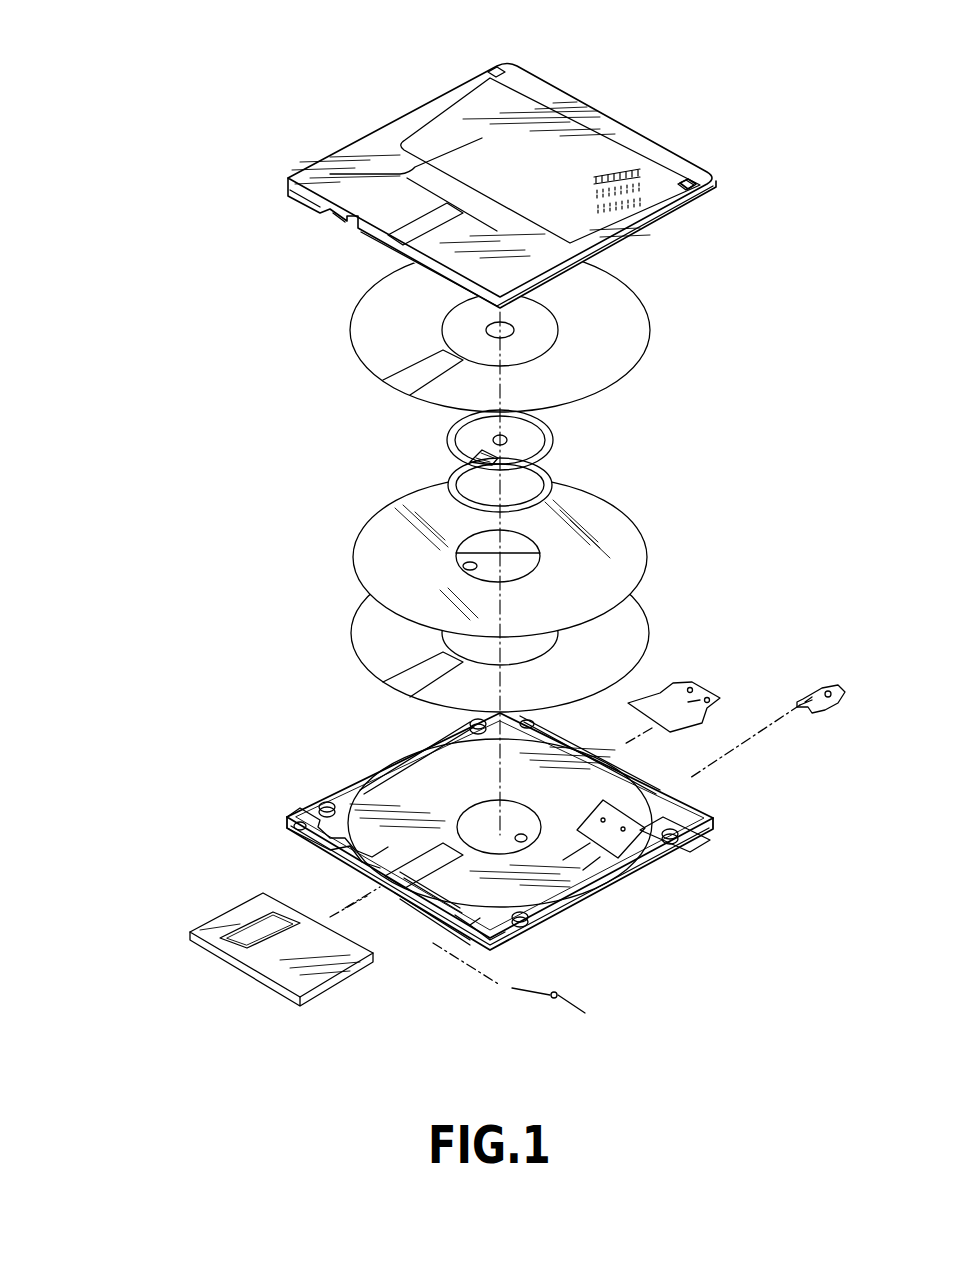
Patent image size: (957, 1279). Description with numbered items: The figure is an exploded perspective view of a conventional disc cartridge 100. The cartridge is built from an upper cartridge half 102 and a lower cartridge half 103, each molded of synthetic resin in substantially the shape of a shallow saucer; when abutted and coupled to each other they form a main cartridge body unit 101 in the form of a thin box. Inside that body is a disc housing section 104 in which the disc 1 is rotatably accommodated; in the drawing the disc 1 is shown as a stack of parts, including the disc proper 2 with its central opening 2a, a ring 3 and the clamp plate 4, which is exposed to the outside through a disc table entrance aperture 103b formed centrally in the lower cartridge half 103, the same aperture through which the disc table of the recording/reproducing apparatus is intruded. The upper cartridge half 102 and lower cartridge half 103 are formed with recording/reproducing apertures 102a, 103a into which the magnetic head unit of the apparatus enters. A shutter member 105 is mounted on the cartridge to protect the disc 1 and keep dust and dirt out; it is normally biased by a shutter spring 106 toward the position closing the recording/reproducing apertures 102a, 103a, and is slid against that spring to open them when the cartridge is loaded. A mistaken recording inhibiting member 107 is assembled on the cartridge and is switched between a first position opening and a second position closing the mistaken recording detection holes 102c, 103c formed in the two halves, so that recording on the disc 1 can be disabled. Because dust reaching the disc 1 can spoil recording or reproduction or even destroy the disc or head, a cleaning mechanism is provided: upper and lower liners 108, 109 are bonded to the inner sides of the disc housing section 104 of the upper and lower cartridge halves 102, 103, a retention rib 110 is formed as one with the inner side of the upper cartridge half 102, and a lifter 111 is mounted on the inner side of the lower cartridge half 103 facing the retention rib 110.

The disc cartridge 100 is at (200, 103).
The main cartridge body unit 101 is at (160, 800).
The upper cartridge half 102 is at (270, 205).
The recording/reproducing aperture 102a is at (388, 236).
The mistaken recording detection hole 102c is at (708, 192).
The lower cartridge half 103 is at (270, 800).
The recording/reproducing aperture 103a is at (410, 880).
The disc table entrance aperture 103b is at (525, 843).
The mistaken recording detection hole 103c is at (708, 830).
The disc housing section 104 is at (433, 786).
The shutter member 105 is at (280, 973).
The shutter spring 106 is at (528, 993).
The mistaken recording inhibiting member 107 is at (830, 713).
The upper liner 108 is at (625, 357).
The lower liner 109 is at (638, 623).
The retention rib 110 is at (637, 183).
The lifter 111 is at (722, 712).
The disc 1 is at (272, 411).
The disk 2 is at (372, 533).
The center hole of disk 2a is at (468, 568).
The ring 3 is at (452, 489).
The clamp plate 4 is at (442, 446).